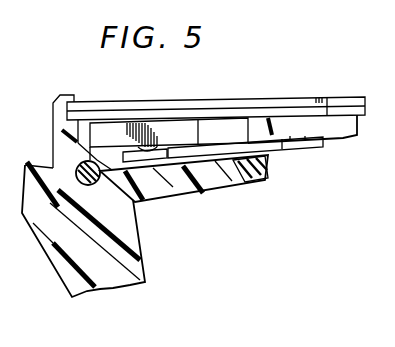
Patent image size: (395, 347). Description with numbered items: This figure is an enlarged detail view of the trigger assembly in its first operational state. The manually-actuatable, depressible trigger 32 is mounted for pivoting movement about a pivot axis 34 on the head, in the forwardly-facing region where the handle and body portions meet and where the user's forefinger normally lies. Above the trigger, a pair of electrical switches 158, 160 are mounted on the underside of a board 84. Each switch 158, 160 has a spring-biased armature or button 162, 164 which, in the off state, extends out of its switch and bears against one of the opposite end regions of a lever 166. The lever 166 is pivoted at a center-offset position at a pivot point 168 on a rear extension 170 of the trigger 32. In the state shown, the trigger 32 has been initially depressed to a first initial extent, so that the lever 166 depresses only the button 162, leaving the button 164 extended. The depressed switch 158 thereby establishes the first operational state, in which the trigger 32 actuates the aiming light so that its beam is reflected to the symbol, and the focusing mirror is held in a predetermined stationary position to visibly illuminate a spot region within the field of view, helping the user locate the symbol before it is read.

The trigger 32 is at (73, 283).
The pivot axis 34 is at (76, 166).
The board 84 is at (243, 98).
The electrical switch 158 is at (350, 131).
The electrical switch 160 is at (106, 124).
The spring-biased armature or button 162 is at (338, 152).
The spring-biased armature or button 164 is at (148, 143).
The lever 166 is at (206, 165).
The pivot point 168 is at (306, 150).
The rear extension 170 is at (172, 183).